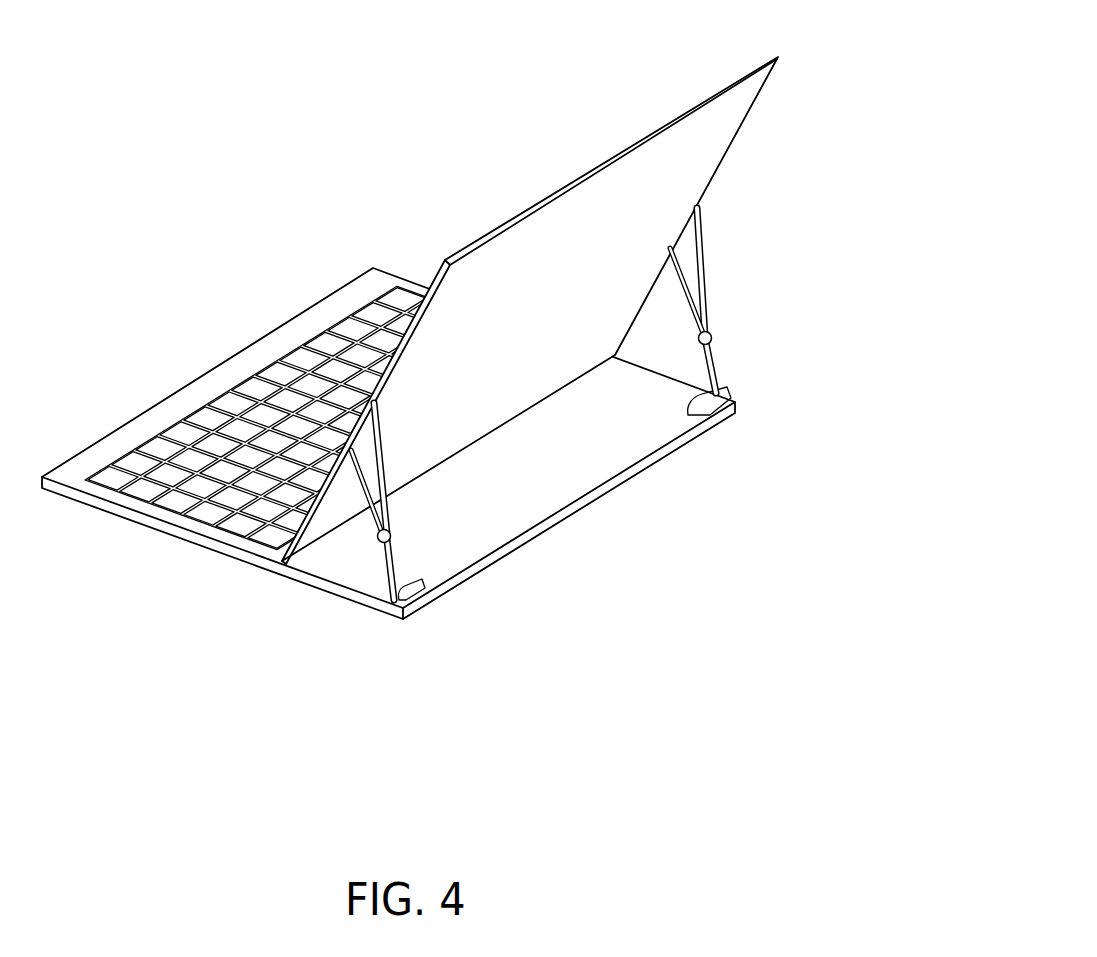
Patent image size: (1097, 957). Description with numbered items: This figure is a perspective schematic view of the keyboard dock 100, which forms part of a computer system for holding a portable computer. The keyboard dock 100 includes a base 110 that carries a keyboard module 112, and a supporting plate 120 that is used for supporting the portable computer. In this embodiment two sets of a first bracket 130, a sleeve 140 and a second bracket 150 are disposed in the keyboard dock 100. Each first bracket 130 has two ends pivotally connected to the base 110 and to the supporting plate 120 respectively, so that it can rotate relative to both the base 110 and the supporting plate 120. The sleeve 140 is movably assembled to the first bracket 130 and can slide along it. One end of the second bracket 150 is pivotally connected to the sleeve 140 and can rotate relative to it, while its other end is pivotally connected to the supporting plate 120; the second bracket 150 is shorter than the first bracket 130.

The keyboard dock 100 is at (410, 355).
The base 110 is at (388, 443).
The keyboard module 112 is at (180, 502).
The supporting plate 120 is at (710, 120).
The first bracket 130 is at (397, 562).
The sleeve 140 is at (393, 533).
The second bracket 150 is at (362, 490).